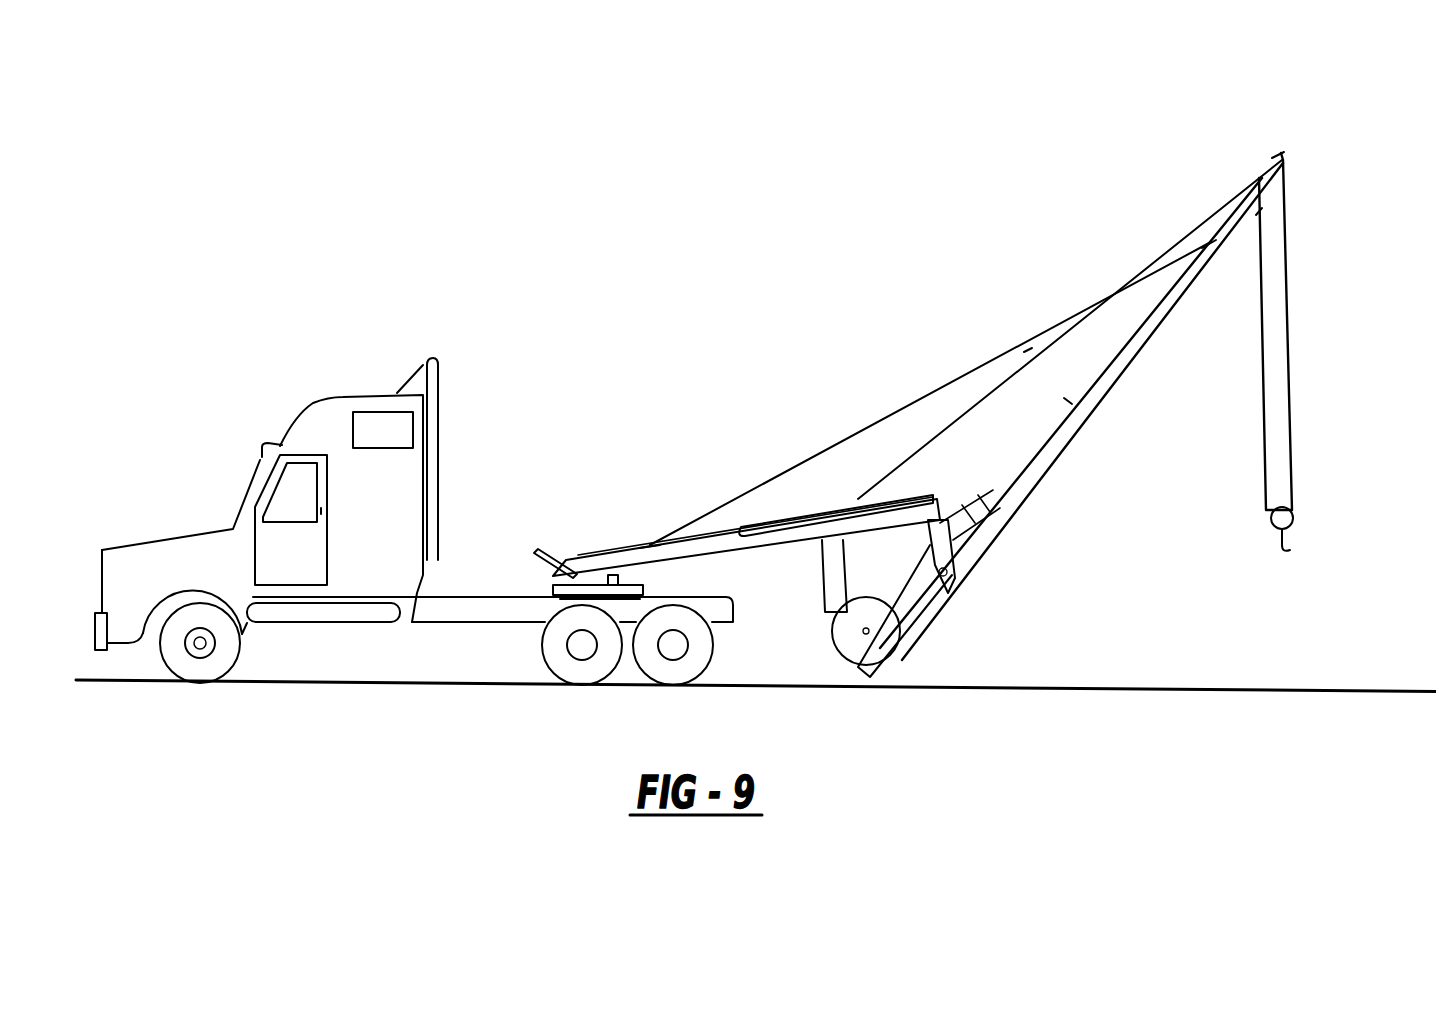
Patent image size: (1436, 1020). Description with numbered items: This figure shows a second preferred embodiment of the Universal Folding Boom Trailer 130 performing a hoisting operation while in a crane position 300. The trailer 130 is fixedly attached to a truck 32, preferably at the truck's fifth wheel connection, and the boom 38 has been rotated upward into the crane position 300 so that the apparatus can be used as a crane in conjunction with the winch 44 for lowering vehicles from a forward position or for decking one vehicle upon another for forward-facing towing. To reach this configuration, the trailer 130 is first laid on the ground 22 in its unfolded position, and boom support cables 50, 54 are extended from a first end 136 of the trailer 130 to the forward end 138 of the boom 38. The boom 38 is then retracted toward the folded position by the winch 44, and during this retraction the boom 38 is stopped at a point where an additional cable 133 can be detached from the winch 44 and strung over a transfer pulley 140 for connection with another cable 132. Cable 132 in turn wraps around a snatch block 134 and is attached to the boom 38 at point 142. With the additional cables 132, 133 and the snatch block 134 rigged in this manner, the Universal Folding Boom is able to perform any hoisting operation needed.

The ground 22 is at (355, 686).
The truck 32 is at (320, 402).
The boom 38 is at (1070, 445).
The winch 44 is at (875, 478).
The boom support cable 50 is at (929, 382).
The boom support cable 54 is at (985, 360).
The Universal Folding Boom Trailer 130 is at (715, 463).
The cable 132 is at (1292, 430).
The cable 133 is at (1028, 358).
The snatch block 134 is at (1293, 517).
The first end 136 is at (650, 540).
The forward end 138 is at (1217, 240).
The transfer pulley 140 is at (1283, 150).
The point 142 is at (1256, 215).
The crane position 300 is at (860, 712).